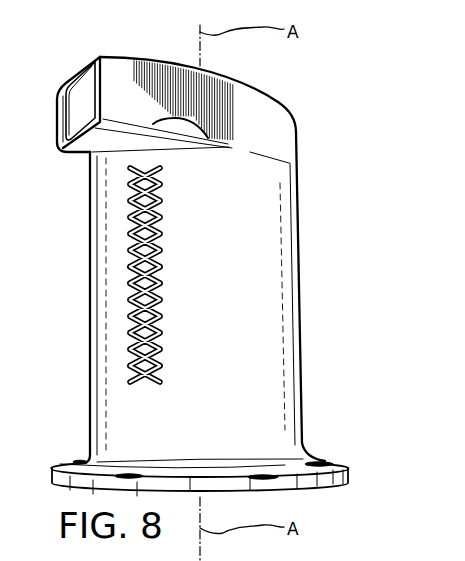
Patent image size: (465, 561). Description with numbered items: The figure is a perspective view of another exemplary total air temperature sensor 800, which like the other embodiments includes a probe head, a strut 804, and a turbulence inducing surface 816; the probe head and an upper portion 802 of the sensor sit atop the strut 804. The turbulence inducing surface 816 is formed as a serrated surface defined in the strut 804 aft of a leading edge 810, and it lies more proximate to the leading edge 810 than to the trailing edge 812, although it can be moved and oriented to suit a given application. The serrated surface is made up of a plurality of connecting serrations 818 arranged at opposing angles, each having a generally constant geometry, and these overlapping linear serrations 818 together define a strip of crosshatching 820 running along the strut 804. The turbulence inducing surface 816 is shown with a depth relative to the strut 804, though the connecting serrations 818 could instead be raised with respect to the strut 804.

The total air temperature sensor 800 is at (318, 115).
The inlet head portion 802 is at (163, 78).
The strut 804 is at (227, 258).
The leading edge 810 is at (90, 278).
The trailing edge 812 is at (297, 231).
The turbulence inducing surface 816 is at (116, 375).
The serrations 818 is at (147, 382).
The strip of crosshatching 820 is at (175, 278).